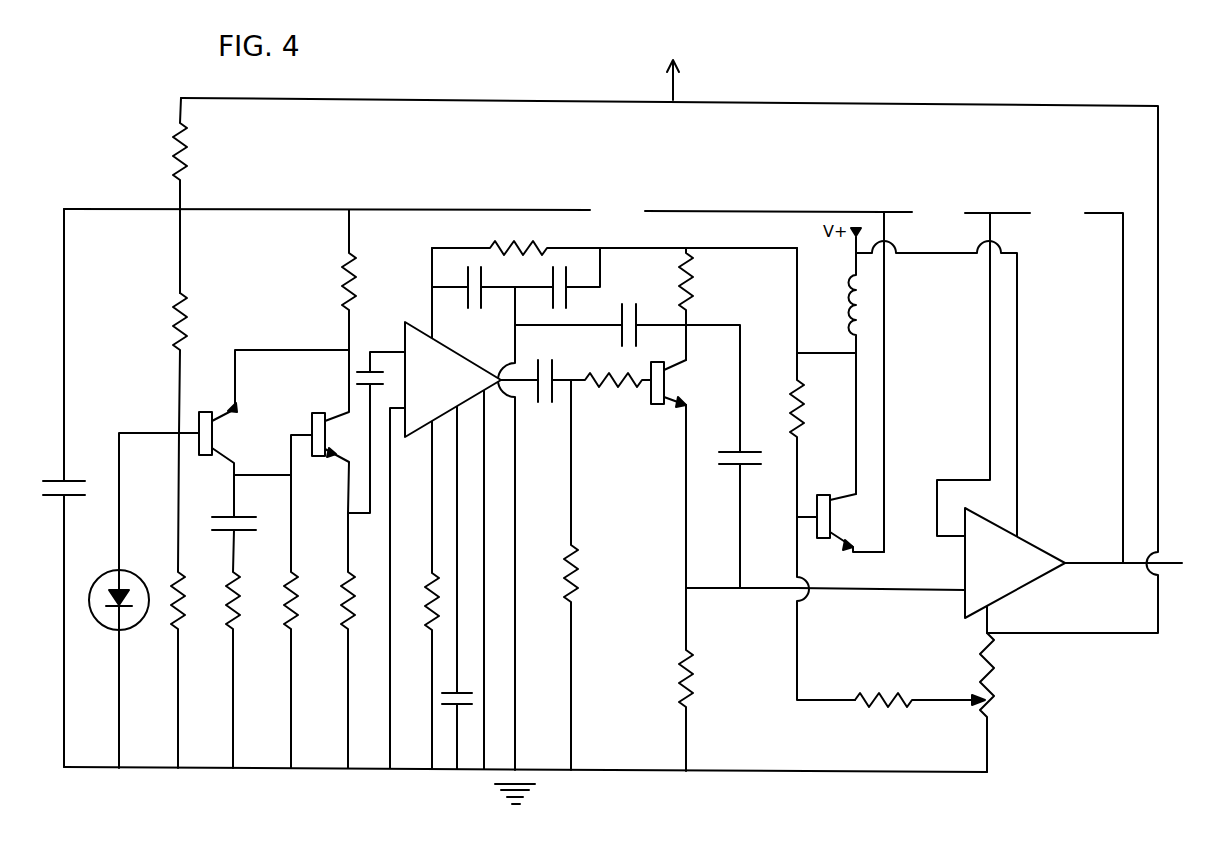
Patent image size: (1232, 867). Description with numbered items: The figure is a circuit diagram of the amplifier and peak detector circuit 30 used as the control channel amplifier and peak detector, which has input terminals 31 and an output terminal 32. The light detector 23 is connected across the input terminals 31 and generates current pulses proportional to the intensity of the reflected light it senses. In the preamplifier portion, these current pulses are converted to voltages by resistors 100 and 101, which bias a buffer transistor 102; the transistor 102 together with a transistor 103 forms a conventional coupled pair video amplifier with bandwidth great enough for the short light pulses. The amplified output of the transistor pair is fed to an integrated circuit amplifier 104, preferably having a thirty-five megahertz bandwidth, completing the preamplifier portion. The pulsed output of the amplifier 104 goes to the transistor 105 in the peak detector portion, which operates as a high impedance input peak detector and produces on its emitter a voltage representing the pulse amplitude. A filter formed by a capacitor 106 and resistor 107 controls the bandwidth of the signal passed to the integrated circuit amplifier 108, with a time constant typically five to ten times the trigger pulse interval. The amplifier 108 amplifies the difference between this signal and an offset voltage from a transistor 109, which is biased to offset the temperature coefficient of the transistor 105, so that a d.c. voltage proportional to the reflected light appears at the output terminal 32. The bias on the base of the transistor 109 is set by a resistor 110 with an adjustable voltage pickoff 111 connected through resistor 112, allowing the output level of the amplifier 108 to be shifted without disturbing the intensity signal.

The light detector 23 is at (107, 572).
The amplifier and peak detector circuit 30 is at (872, 78).
The input terminals 31 is at (178, 433).
The output terminal 32 is at (1182, 565).
The resistor 100 is at (184, 318).
The resistor 101 is at (168, 572).
The buffer transistor 102 is at (215, 433).
The transistor 103 is at (326, 434).
The integrated circuit amplifier 104 is at (453, 379).
The transistor 105 is at (650, 398).
The capacitor 106 is at (742, 466).
The resistor 107 is at (690, 686).
The integrated circuit amplifier 108 is at (1015, 563).
The transistor 109 is at (831, 517).
The resistor 110 is at (998, 682).
The adjustable voltage pickoff 111 is at (946, 700).
The resistor 112 is at (866, 700).